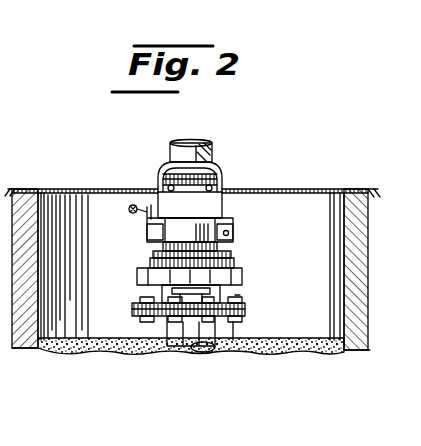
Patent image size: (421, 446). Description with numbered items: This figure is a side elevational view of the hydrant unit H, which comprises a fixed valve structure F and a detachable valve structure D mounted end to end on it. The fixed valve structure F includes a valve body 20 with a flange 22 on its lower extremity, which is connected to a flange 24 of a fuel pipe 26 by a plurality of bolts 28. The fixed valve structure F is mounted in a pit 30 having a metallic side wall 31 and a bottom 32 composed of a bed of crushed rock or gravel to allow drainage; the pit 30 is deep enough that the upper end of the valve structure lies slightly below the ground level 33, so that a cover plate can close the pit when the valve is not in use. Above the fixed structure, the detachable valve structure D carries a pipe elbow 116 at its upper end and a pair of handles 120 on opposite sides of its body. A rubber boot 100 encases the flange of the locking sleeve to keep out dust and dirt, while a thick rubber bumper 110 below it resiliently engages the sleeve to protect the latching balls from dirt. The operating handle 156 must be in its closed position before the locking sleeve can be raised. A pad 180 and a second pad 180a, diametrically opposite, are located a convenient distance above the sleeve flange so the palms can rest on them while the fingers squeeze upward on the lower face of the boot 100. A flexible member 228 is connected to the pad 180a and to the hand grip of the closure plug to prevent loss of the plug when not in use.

The ground level 33 is at (27, 189).
The metallic side wall 31 is at (40, 262).
The pit 30 is at (340, 220).
The second pad 180a is at (240, 218).
The bottom 32 is at (56, 348).
The pipe elbow 116 is at (205, 142).
The handles 120 is at (226, 166).
The hydrant unit H is at (233, 172).
The detachable valve structure D is at (228, 205).
The operating handle 156 is at (127, 210).
The pad 180 is at (147, 228).
The flexible member 228 is at (236, 243).
The rubber boot 100 is at (150, 246).
The rubber bumper 110 is at (140, 278).
The valve body 20 is at (136, 300).
The flange 24 is at (137, 312).
The flange 22 is at (248, 307).
The fixed valve structure F is at (234, 295).
The fuel pipe 26 is at (177, 347).
The bolts 28 is at (205, 346).